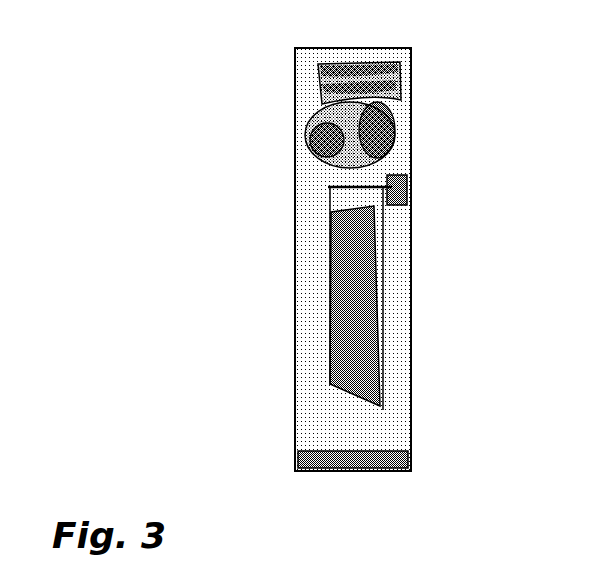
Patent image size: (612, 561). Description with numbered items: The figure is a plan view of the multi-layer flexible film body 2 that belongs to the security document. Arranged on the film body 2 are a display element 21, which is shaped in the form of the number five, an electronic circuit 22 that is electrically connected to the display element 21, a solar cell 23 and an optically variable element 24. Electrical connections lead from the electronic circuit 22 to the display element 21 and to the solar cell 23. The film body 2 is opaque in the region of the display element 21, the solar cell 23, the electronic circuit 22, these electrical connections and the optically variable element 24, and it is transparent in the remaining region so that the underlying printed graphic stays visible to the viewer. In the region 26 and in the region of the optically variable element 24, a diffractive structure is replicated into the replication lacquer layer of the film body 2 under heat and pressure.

The flexible film body 2 is at (437, 82).
The display element 21 is at (300, 104).
The electronic circuit 22 is at (405, 194).
The solar cell 23 is at (380, 345).
The optically variable element 24 is at (405, 460).
The region 26 is at (357, 66).